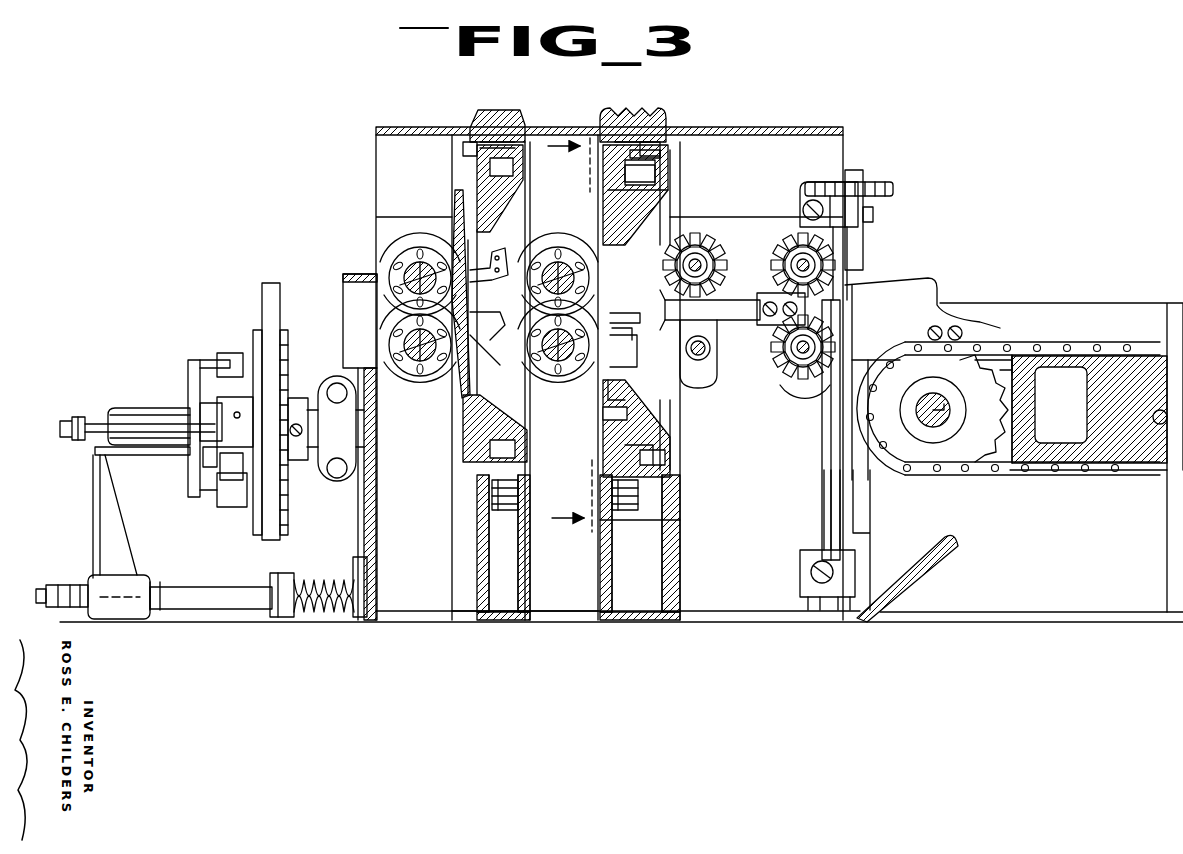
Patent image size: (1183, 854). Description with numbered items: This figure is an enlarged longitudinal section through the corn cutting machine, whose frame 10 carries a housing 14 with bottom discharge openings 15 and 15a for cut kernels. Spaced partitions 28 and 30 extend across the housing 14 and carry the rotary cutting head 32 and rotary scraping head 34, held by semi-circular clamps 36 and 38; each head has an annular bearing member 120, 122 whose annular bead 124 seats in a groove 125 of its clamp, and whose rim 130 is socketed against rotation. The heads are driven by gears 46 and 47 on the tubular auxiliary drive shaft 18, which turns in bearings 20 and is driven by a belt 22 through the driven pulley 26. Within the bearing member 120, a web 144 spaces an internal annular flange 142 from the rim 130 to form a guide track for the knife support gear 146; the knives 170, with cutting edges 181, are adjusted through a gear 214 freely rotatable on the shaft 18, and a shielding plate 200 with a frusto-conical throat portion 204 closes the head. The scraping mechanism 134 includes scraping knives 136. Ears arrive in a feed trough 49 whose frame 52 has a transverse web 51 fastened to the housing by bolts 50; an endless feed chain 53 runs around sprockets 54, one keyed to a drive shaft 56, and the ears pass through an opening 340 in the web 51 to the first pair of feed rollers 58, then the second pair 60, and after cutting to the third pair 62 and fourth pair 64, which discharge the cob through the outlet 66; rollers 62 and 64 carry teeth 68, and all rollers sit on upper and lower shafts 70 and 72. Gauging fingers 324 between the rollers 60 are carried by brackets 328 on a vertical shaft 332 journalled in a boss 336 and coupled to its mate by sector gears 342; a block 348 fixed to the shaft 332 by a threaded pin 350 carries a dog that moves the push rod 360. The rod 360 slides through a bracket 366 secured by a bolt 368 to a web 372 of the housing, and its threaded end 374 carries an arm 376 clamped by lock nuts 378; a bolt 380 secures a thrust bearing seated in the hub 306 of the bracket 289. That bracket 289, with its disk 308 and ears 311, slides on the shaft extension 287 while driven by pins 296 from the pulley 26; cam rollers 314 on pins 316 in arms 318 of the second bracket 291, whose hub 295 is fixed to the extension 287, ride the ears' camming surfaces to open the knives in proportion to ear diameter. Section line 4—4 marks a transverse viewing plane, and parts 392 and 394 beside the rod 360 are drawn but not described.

The section line 4- 4 is at (570, 335).
The frame 10 is at (912, 610).
The housing 14 is at (800, 128).
The discharge opening 15 is at (740, 622).
The discharge opening 15a is at (575, 622).
The auxiliary drive shaft 18 is at (310, 414).
The bearings 20 is at (345, 446).
The belt 22 is at (270, 292).
The driven pulley 26 is at (286, 332).
The partition 28 is at (612, 575).
The partition 30 is at (475, 538).
The rotary cutting head 32 is at (655, 198).
The rotary scraping head 34 is at (505, 232).
The semi-circular clamp 36 is at (625, 118).
The semi-circular clamp 38 is at (488, 122).
The gear 46 is at (660, 512).
The gear 47 is at (490, 505).
The feed trough 49 is at (1028, 305).
The bolts 50 is at (875, 215).
The transverse web 51 is at (868, 235).
The frame 52 is at (1070, 538).
The endless feed chain 53 is at (1046, 345).
The sprockets 54 is at (975, 385).
The drive shaft 56 is at (940, 428).
The first pair of feed rollers 58 is at (830, 302).
The second pair of feed rollers 60 is at (700, 245).
The third pair of feed rollers 62 is at (578, 250).
The fourth pair of feed rollers 64 is at (412, 262).
The outlet 66 is at (358, 282).
The prongs or teeth 68 is at (428, 250).
The upper shafts 70 is at (402, 278).
The lower shafts 72 is at (412, 372).
The annular bearing member 120 is at (676, 142).
The annular bearing member 122 is at (515, 152).
The annular bead 124 is at (478, 140).
The groove 125 is at (470, 152).
The rim 130 is at (512, 170).
The mechanism 134 is at (455, 190).
The scraping knives 136 is at (498, 297).
The internal annular flange 142 is at (655, 176).
The web 144 is at (655, 150).
The knife support gear 146 is at (672, 162).
The knives 170 is at (618, 298).
The cutting edge 181 is at (635, 330).
The shielding plate 200 is at (665, 425).
The frusto-conical central portion 204 is at (650, 408).
The gear 214 is at (618, 512).
The shaft extension 287 is at (212, 425).
The bracket 289 is at (120, 410).
The second bracket 291 is at (210, 457).
The hub 295 is at (225, 465).
The pins 296 is at (210, 431).
The hub 306 is at (102, 455).
The disk 308 is at (188, 373).
The ears 311 is at (207, 364).
The cam roller 314 is at (223, 353).
The supporting pin 316 is at (285, 452).
The arm 318 is at (240, 376).
The gauging fingers 324 is at (735, 305).
The supporting bracket 328 is at (712, 352).
The vertical shaft 332 is at (824, 509).
The boss 336 is at (824, 440).
The opening 340 is at (862, 362).
The equalizing sector gears 342 is at (893, 190).
The block 348 is at (802, 561).
The threaded pin 350 is at (812, 573).
The push rod 360 is at (228, 609).
The bracket 366 is at (371, 572).
The bolt 368 is at (360, 580).
The web 372 is at (376, 550).
The threaded end 374 is at (68, 585).
The arm 376 is at (92, 530).
The lock nuts 378 is at (90, 619).
The bolt 380 is at (72, 429).
The spring 392 is at (322, 612).
The collar 394 is at (282, 617).